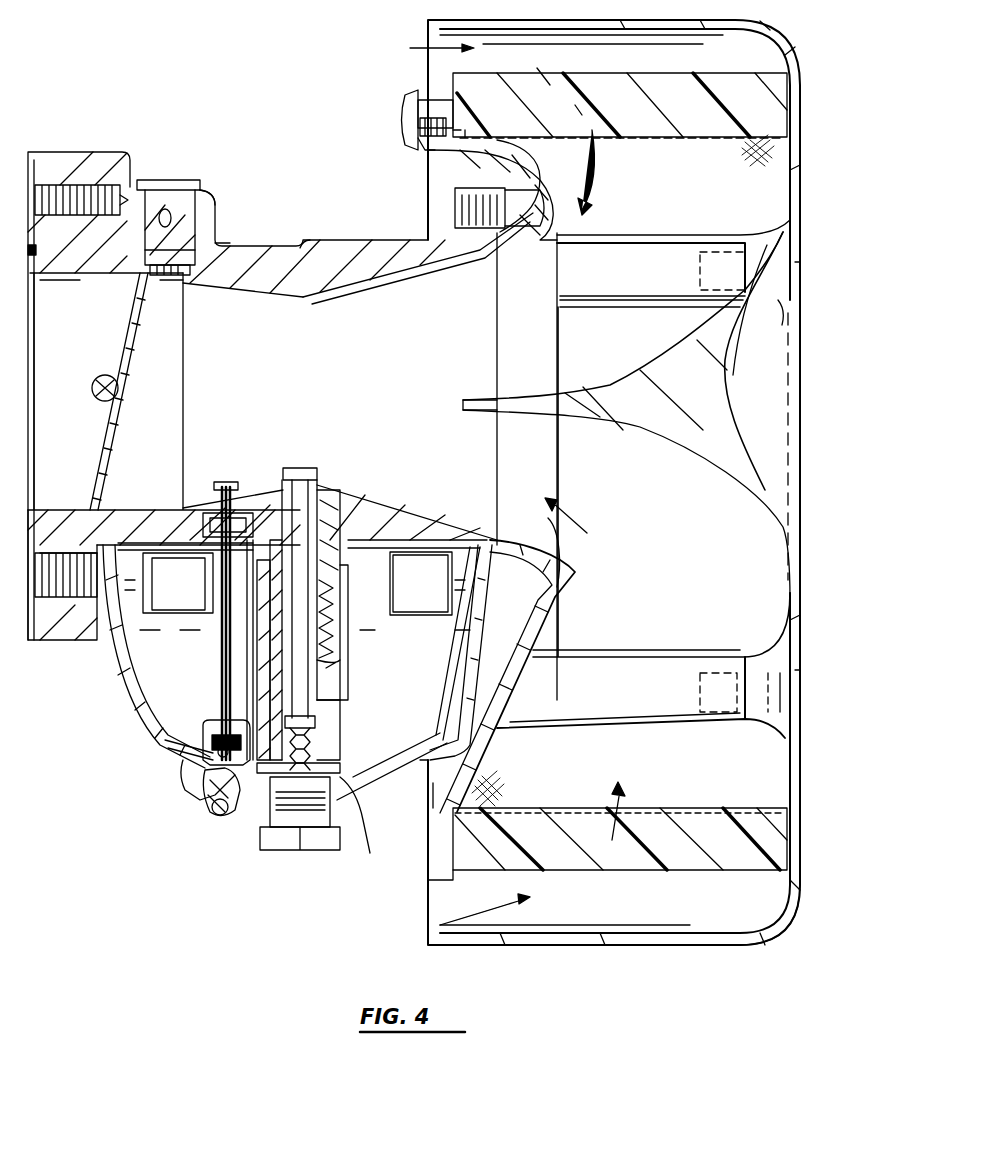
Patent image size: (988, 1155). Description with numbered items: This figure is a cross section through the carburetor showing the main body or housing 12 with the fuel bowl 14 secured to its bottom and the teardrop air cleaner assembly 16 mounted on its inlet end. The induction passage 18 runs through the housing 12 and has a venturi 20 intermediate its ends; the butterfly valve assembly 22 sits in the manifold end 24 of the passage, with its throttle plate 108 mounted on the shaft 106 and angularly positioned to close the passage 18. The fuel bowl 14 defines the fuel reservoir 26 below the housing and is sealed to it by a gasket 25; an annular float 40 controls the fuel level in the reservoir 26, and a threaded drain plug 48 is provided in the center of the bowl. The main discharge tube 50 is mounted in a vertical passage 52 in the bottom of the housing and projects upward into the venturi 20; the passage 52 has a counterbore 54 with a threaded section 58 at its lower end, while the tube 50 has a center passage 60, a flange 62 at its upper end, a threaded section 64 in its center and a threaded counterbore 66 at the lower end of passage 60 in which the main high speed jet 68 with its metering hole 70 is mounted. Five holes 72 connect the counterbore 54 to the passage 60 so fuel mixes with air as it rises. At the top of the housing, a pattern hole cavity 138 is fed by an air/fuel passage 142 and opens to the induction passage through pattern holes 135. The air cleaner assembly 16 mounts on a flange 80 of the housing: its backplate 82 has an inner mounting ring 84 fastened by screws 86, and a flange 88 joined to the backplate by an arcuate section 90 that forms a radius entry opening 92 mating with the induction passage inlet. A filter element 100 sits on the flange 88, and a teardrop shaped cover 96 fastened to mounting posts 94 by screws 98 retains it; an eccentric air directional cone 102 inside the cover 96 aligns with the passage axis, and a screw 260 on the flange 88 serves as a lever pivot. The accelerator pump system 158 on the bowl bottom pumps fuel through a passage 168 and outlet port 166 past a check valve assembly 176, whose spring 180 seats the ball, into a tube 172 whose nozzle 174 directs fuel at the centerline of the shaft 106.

The main body or housing 12 is at (300, 248).
The fuel bowl 14 is at (120, 671).
The air cleaner assembly 16 is at (655, 950).
The induction passage 18 is at (470, 547).
The venturi 20 is at (310, 298).
The butterfly valve assembly 22 is at (150, 367).
The manifold end 24 is at (50, 508).
The gasket 25 is at (135, 540).
The fuel reservoir 26 is at (187, 658).
The annular float 40 is at (414, 613).
The threaded drain plug 48 is at (341, 848).
The main discharge tube 50 is at (318, 482).
The vertical passage 52 is at (328, 520).
The counterbore 54 is at (328, 581).
The threaded section 58 is at (323, 700).
The center passage 60 is at (311, 468).
The flange 62 is at (338, 560).
The threaded section 64 is at (326, 661).
The threaded counterbore 66 is at (315, 724).
The main (high speed) jet 68 is at (338, 768).
The metering hole 70 is at (320, 746).
The holes 72 is at (336, 590).
The flange 80 is at (456, 190).
The backplate 82 is at (490, 350).
The inner mounting ring 84 is at (487, 245).
The screws 86 is at (548, 210).
The flange 88 is at (430, 878).
The arcuate section 90 is at (554, 596).
The radius entry opening 92 is at (547, 542).
The mounting posts 94 is at (628, 300).
The teardrop shaped cover 96 is at (765, 922).
The screws 98 is at (800, 263).
The filter element 100 is at (706, 137).
The air directional cone 102 is at (525, 396).
The shaft 106 is at (121, 392).
The throttle plate 108 is at (119, 338).
The pattern holes 135 is at (172, 263).
The pattern hole cavity 138 is at (205, 200).
The air/fuel passage 142 is at (156, 200).
The accelerator pump system 158 is at (170, 788).
The outlet port 166 is at (215, 803).
The passage 168 is at (220, 815).
The tube 172 is at (220, 688).
The nozzle 174 is at (223, 484).
The check valve assembly 176 is at (200, 762).
The spring 180 is at (205, 748).
The screw 260 is at (406, 115).